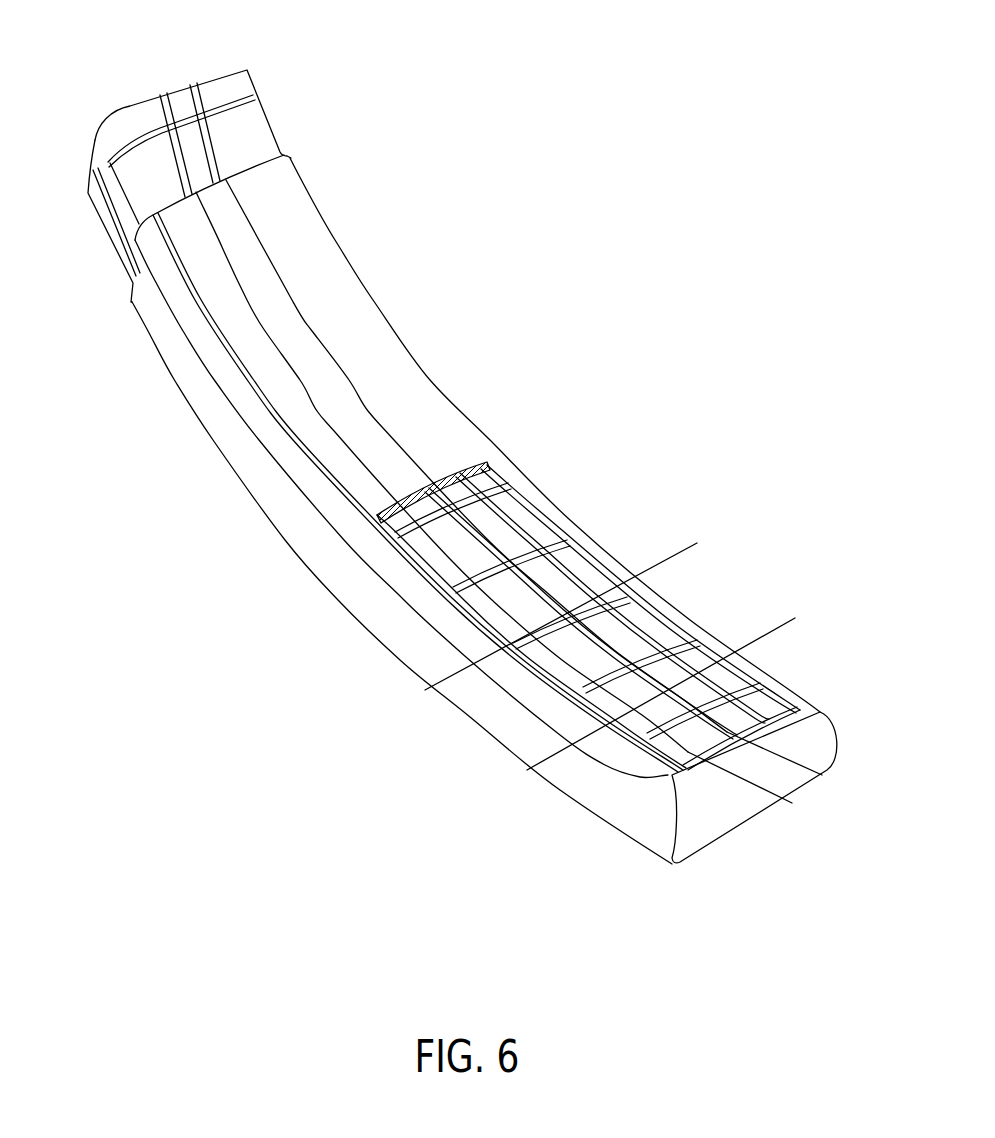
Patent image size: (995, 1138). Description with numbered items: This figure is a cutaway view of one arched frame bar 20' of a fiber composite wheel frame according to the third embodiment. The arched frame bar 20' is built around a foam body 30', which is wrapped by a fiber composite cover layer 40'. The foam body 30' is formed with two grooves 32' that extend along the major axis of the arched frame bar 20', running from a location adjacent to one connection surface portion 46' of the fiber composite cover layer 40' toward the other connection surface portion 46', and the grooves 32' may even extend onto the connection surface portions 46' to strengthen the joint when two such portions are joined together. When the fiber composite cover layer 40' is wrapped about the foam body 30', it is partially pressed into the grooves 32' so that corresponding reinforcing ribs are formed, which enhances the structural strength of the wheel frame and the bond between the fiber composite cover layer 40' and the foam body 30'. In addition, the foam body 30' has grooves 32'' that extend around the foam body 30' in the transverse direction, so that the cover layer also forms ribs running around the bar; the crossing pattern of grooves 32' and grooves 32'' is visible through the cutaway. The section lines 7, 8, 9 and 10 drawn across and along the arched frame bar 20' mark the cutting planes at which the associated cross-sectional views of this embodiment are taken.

The arched frame bar 20' is at (476, 511).
The foam body 30' is at (242, 186).
The grooves 32' is at (459, 382).
The grooves 32'' is at (422, 489).
The fiber composite cover layer 40' is at (588, 576).
The connection surface portion 46' is at (754, 811).
The section line 7- 7 is at (527, 770).
The section line 8- 8 is at (216, 163).
The section line 9- 9 is at (425, 690).
The section line 10- 10 is at (183, 143).